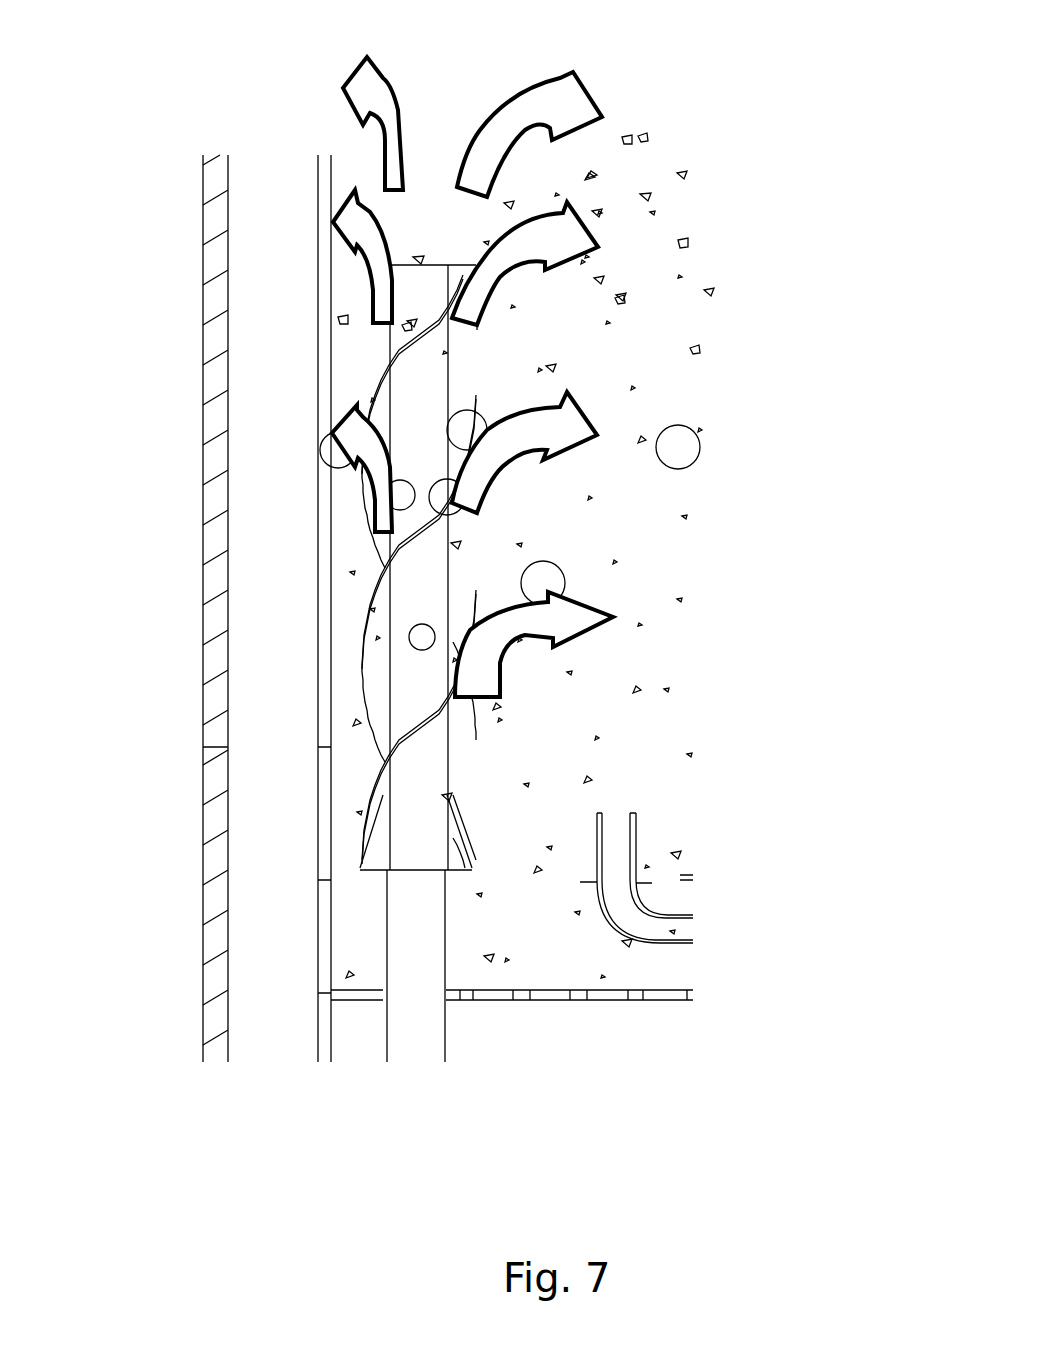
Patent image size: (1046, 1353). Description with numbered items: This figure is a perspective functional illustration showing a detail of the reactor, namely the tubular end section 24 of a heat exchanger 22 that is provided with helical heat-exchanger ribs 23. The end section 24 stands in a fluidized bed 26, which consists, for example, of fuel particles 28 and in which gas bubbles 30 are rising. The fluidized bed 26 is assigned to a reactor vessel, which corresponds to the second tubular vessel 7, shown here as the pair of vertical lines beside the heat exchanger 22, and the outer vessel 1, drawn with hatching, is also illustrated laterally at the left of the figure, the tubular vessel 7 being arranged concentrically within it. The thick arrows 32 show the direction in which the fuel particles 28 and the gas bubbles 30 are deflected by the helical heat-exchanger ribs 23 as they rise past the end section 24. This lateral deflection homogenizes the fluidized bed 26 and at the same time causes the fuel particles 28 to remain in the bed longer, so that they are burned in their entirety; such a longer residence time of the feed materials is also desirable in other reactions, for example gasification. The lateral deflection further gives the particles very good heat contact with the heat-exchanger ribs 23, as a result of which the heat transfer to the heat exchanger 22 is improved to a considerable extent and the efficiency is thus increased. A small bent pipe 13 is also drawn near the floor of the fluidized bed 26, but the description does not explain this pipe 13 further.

The vessel 1 is at (203, 803).
The tubular vessel 7 is at (317, 900).
The feed pipe 13 is at (620, 904).
The heat exchanger 22 is at (447, 1040).
The helical heat-exchanger ribs 23 is at (460, 741).
The tubular end section 24 is at (493, 372).
The fluidized bed 26 is at (672, 548).
The fuel particles 28 is at (697, 236).
The gas bubbles 30 is at (697, 446).
The arrows 32 is at (499, 146).